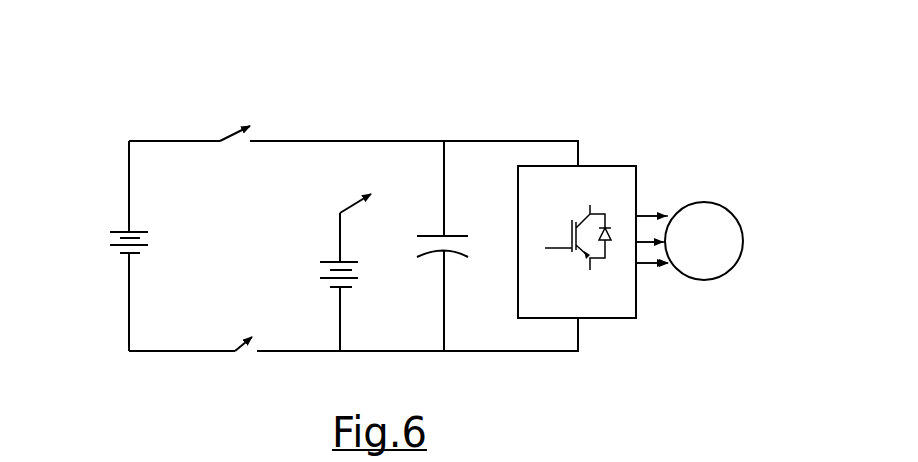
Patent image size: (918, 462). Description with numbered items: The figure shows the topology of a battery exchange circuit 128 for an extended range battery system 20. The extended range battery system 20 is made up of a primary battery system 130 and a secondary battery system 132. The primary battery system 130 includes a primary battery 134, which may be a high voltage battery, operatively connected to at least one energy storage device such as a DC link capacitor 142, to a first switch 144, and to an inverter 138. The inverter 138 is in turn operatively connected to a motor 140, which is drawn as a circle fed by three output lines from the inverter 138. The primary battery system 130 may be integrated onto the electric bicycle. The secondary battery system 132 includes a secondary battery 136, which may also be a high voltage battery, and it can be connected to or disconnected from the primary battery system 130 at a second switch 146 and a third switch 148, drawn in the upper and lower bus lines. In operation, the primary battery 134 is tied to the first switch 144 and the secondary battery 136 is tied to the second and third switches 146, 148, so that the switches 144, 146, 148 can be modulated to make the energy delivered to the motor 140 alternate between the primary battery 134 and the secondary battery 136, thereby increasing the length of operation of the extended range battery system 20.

The extended range battery system 20 is at (558, 67).
The battery exchange circuit 128 is at (419, 86).
The primary battery system 130 is at (468, 369).
The secondary battery system 132 is at (116, 319).
The primary battery 134 is at (345, 289).
The secondary battery 136 is at (128, 231).
The inverter 138 is at (610, 165).
The motor 140 is at (714, 202).
The DC link capacitor 142 is at (461, 233).
The first switch 144 is at (370, 193).
The second switch 146 is at (228, 138).
The third switch 148 is at (240, 347).